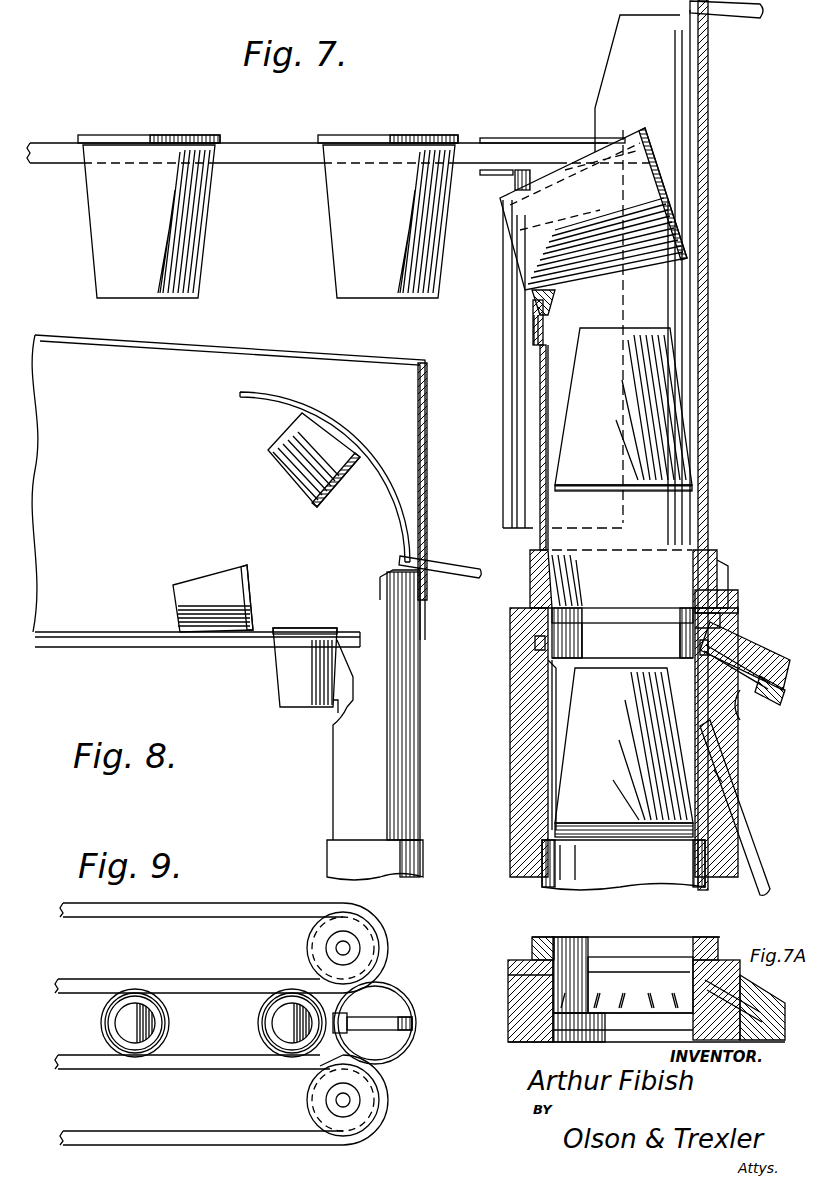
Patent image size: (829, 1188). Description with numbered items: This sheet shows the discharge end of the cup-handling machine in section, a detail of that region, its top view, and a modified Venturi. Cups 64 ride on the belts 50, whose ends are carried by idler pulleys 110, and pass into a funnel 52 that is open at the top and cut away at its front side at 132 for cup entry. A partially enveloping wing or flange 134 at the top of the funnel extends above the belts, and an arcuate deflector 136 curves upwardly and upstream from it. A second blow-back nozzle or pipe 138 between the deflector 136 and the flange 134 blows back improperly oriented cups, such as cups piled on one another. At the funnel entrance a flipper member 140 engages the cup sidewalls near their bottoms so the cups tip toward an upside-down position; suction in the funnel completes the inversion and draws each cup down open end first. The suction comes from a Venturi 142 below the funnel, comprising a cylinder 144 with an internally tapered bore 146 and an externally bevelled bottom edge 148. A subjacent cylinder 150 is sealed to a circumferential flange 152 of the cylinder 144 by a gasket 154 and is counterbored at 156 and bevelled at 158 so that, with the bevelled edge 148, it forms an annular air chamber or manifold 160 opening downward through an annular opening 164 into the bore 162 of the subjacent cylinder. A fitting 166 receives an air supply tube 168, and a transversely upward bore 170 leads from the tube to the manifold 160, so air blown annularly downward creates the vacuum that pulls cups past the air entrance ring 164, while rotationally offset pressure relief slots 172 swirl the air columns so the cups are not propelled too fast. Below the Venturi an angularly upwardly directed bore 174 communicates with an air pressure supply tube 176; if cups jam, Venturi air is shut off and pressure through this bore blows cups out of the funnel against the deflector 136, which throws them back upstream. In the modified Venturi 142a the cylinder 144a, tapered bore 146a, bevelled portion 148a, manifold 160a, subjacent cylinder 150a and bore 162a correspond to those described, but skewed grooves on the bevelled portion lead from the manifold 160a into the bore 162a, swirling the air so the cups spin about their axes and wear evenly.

In FIG. 7, the belts 50 is at (465, 152).
In FIG. 8, the belts 50 is at (127, 637).
In FIG. 9, the belts 50 is at (165, 979).
In FIG. 7, the funnel 52 is at (708, 292).
In FIG. 8, the funnel 52 is at (415, 650).
In FIG. 9, the funnel 52 is at (407, 1000).
In FIG. 7, the cups 64 is at (430, 142).
In FIG. 8, the cups 64 is at (290, 474).
In FIG. 9, the cups 64 is at (283, 1000).
In FIG. 7, the idler pulleys 110 is at (530, 140).
In FIG. 9, the idler pulleys 110 is at (357, 920).
In FIG. 7, the cut-away front side 132 is at (512, 228).
In FIG. 8, the cut-away front side 132 is at (318, 713).
In FIG. 8, the wing or flange 134 is at (427, 599).
In FIG. 7, the arcuate deflector 136 is at (672, 2).
In FIG. 8, the arcuate deflector 136 is at (285, 401).
In FIG. 9, the arcuate deflector 136 is at (362, 1018).
In FIG. 7, the second blow-back nozzle 138 is at (737, 18).
In FIG. 8, the second blow-back nozzle 138 is at (441, 563).
In FIG. 7, the flipper member 140 is at (532, 298).
In FIG. 8, the flipper member 140 is at (337, 722).
In FIG. 9, the flipper member 140 is at (330, 1058).
In FIG. 7, the Venturi 142 is at (733, 588).
In FIG. 7, the cylinder 144 is at (726, 583).
In FIG. 7, the internally tapered bore 146 is at (695, 618).
In FIG. 7, the bevelled bottom edge 148 is at (698, 652).
In FIG. 7, the subjacent cylinder 150 is at (515, 713).
In FIG. 7, the circumferential flange 152 is at (738, 604).
In FIG. 7, the gasket 154 is at (742, 626).
In FIG. 7, the counterbore 156 is at (535, 642).
In FIG. 7, the bevel 158 is at (548, 661).
In FIG. 7, the annular air chamber or manifold 160 is at (700, 648).
In FIG. 7, the bore 162 is at (562, 736).
In FIG. 7, the annular opening 164 is at (604, 615).
In FIG. 7, the fitting 166 is at (742, 627).
In FIG. 7, the air supply tube 168 is at (768, 706).
In FIG. 7, the transversely upward bore 170 is at (740, 728).
In FIG. 7, the angularly upwardly directed bore 174 is at (720, 778).
In FIG. 7, the external air pressure supply tube 176 is at (742, 836).
In FIG. 7A, the cylinder 144a is at (540, 937).
In FIG. 7A, the annular air chamber or manifold 160a is at (570, 955).
In FIG. 7A, the internally tapered bore 146a is at (668, 957).
In FIG. 7A, the modified Venturi 142a is at (730, 950).
In FIG. 7A, the subjacent cylinder 150a is at (530, 1008).
In FIG. 7A, the bore 162a is at (560, 1045).
In FIG. 7A, the pressure relief slots 172 is at (612, 986).
In FIG. 7A, the bevelled portion 148a is at (700, 1005).